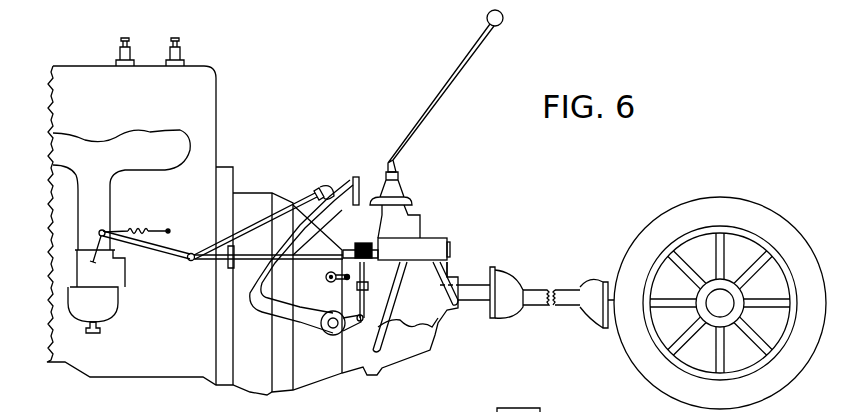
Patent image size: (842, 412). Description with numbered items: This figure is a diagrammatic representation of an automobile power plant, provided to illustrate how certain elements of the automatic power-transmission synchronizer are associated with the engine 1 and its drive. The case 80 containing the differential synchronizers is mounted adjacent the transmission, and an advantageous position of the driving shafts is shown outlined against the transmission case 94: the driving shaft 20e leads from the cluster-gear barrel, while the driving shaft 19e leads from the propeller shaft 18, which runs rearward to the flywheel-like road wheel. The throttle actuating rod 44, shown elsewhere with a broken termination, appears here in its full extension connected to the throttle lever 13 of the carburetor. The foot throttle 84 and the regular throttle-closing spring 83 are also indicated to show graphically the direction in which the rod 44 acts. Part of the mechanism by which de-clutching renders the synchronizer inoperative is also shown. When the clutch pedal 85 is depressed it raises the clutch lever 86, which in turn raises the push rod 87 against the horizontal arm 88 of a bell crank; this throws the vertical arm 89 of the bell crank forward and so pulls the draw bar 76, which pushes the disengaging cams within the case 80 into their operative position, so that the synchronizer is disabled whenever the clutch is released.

The engine block 1 is at (202, 88).
The throttle lever 13 is at (96, 228).
The regular throttle-closing spring 83 is at (132, 227).
The throttle actuating rod 44 is at (203, 259).
The foot throttle 84 is at (305, 190).
The clutch pedal 85 is at (357, 175).
The draw bar 76 is at (362, 243).
The vertical arm 89 is at (357, 248).
The push rod 87 is at (366, 270).
The clutch lever 86 is at (315, 309).
The horizontal arm 88 is at (380, 255).
The case 80 is at (433, 248).
The propeller shaft 18 is at (472, 292).
The driving shaft 19e is at (440, 285).
The driving shaft 20e is at (432, 327).
The transmission case 94 is at (438, 325).